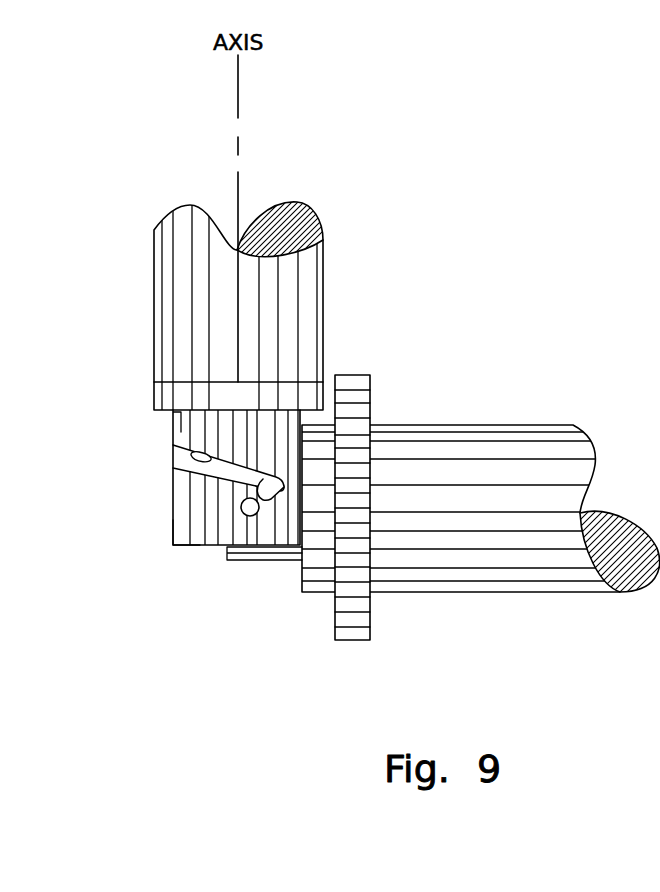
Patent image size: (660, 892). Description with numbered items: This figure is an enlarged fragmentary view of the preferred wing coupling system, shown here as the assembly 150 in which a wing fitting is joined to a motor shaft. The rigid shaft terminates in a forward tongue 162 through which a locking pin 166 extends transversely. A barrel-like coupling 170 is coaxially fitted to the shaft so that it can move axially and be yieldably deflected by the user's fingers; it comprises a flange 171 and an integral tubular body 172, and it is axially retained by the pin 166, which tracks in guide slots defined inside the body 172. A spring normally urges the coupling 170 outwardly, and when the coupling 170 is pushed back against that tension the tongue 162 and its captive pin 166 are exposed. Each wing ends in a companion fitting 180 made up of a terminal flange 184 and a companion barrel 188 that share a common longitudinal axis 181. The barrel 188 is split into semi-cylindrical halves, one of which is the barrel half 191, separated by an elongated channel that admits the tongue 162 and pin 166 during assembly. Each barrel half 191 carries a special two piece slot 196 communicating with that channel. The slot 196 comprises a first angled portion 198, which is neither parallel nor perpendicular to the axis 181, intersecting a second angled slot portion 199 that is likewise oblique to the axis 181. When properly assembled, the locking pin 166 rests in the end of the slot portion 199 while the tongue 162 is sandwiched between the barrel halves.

The connector assembly 150 is at (428, 250).
The forward tongue 162 is at (283, 560).
The locking pin 166 is at (247, 516).
The barrel-like coupling 170 is at (437, 537).
The flange 171 is at (347, 640).
The tubular body 172 is at (452, 590).
The companion fitting 180 is at (305, 498).
The longitudinal axis 181 is at (237, 147).
The terminal flange 184 is at (177, 392).
The companion barrel 188 is at (172, 504).
The barrel half 191 is at (187, 523).
The two piece slot 196 is at (244, 397).
The first angled portion 198 is at (208, 473).
The angled slot portion 199 is at (271, 499).